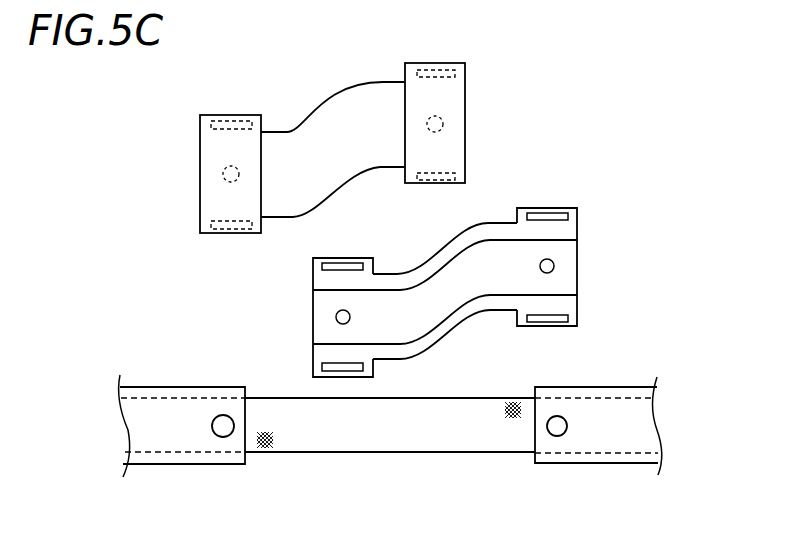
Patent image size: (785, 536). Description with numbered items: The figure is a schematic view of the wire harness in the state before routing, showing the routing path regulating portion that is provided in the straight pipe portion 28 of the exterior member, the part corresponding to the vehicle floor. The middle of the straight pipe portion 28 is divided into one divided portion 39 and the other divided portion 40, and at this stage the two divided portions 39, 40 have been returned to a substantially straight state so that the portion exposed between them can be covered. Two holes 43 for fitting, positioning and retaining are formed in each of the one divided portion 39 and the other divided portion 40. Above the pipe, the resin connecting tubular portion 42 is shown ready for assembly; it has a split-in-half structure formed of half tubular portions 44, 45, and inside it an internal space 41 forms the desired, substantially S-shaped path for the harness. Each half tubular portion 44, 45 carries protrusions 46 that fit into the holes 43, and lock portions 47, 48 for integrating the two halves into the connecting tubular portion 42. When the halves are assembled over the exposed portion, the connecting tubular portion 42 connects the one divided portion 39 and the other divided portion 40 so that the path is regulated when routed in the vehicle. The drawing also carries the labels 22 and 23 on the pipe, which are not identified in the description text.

The rail 22 is at (457, 437).
The marking 23 is at (509, 420).
The straight pipe portion 28 is at (648, 430).
The one divided portion 39 is at (218, 387).
The other divided portion 40 is at (573, 385).
The internal space 41 is at (332, 145).
The connecting tubular portion 42 is at (675, 85).
The holes 43 is at (222, 432).
The half tubular portion 44 is at (450, 103).
The half tubular portion 45 is at (567, 255).
The protrusions 46 is at (222, 174).
The lock portion 47 is at (233, 115).
The lock portion 48 is at (342, 258).